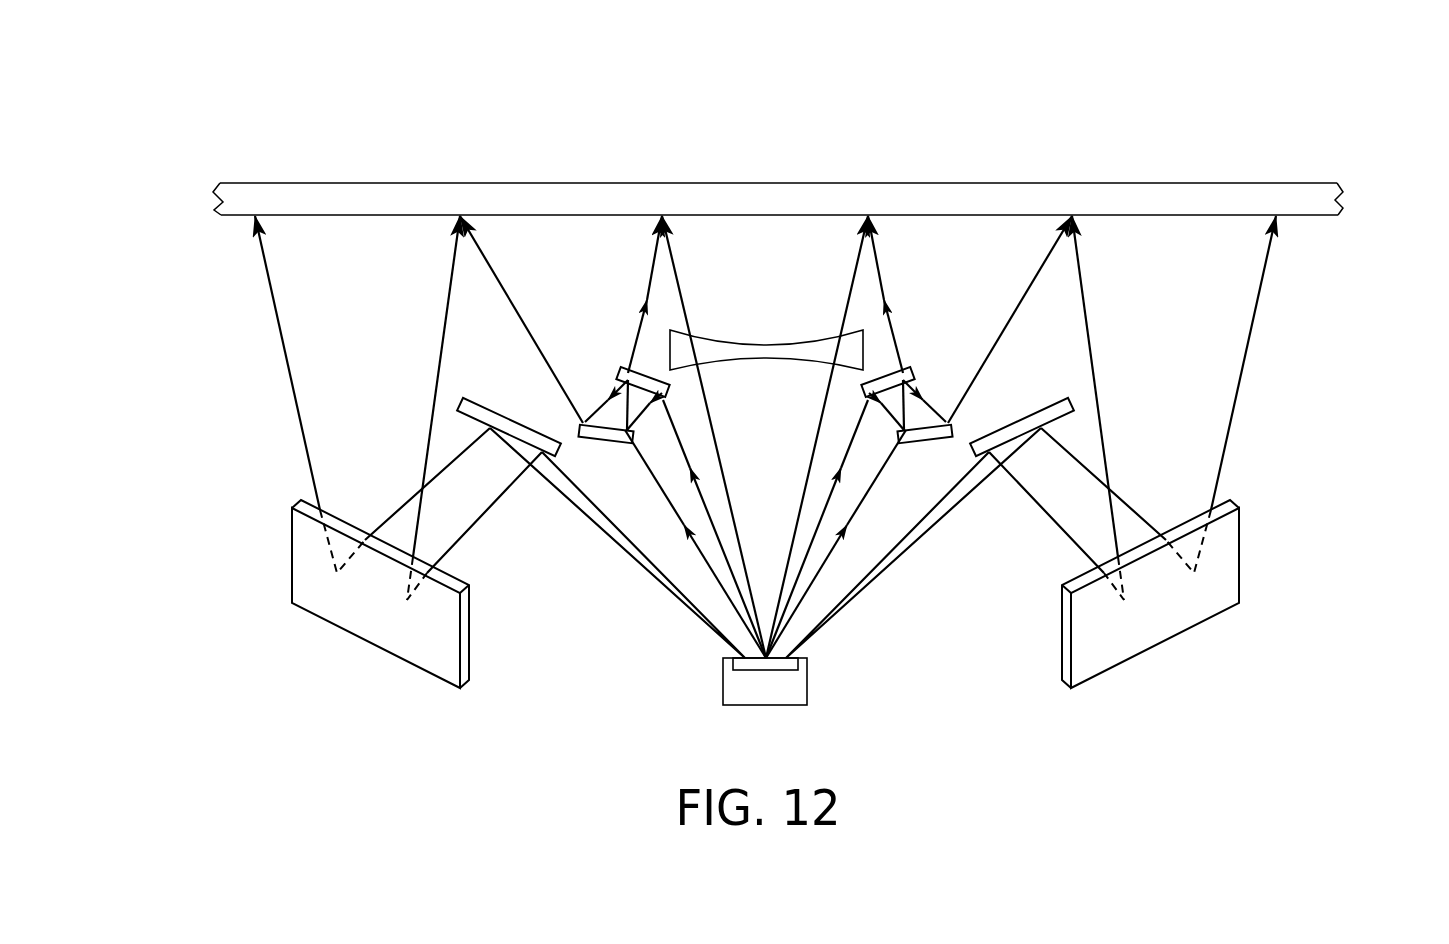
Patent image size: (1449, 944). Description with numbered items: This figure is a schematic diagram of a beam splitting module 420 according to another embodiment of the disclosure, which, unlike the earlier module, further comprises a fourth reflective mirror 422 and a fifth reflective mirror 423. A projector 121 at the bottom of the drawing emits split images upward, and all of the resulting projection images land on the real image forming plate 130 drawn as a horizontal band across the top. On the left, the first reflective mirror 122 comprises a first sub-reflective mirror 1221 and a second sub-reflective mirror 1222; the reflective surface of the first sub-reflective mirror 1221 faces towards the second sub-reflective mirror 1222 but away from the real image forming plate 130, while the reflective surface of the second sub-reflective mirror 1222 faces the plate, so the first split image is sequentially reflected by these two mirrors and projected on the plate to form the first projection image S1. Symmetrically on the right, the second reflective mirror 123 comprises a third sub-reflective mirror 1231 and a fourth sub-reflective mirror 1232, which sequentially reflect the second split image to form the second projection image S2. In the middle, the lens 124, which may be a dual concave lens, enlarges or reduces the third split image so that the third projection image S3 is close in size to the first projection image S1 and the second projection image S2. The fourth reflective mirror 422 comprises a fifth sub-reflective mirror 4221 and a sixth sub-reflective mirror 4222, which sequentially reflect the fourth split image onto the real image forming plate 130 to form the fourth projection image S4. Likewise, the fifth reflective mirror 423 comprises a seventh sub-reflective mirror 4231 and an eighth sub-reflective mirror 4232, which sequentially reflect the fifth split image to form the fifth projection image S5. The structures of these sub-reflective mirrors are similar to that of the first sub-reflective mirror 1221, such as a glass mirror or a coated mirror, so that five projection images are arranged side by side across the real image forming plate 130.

The beam splitting module 420 is at (679, 103).
The real image forming plate 130 is at (1236, 190).
The first projection image S1 is at (371, 217).
The second projection image S2 is at (1166, 217).
The third projection image S3 is at (769, 217).
The fourth projection image S4 is at (572, 217).
The fifth projection image S5 is at (969, 217).
The light source 121 is at (760, 690).
The lens 124 is at (764, 352).
The first reflective mirror 122 is at (168, 330).
The first sub-reflective mirror 1221 is at (492, 409).
The second sub-reflective mirror 1222 is at (292, 557).
The second reflective mirror 123 is at (1368, 330).
The third sub-reflective mirror 1231 is at (1039, 409).
The fourth sub-reflective mirror 1232 is at (1240, 555).
The fourth reflective mirror 422 is at (672, 676).
The fifth sub-reflective mirror 4221 is at (666, 394).
The sixth sub-reflective mirror 4222 is at (603, 442).
The fifth reflective mirror 423 is at (993, 676).
The seventh sub-reflective mirror 4231 is at (866, 394).
The eighth sub-reflective mirror 4232 is at (932, 442).